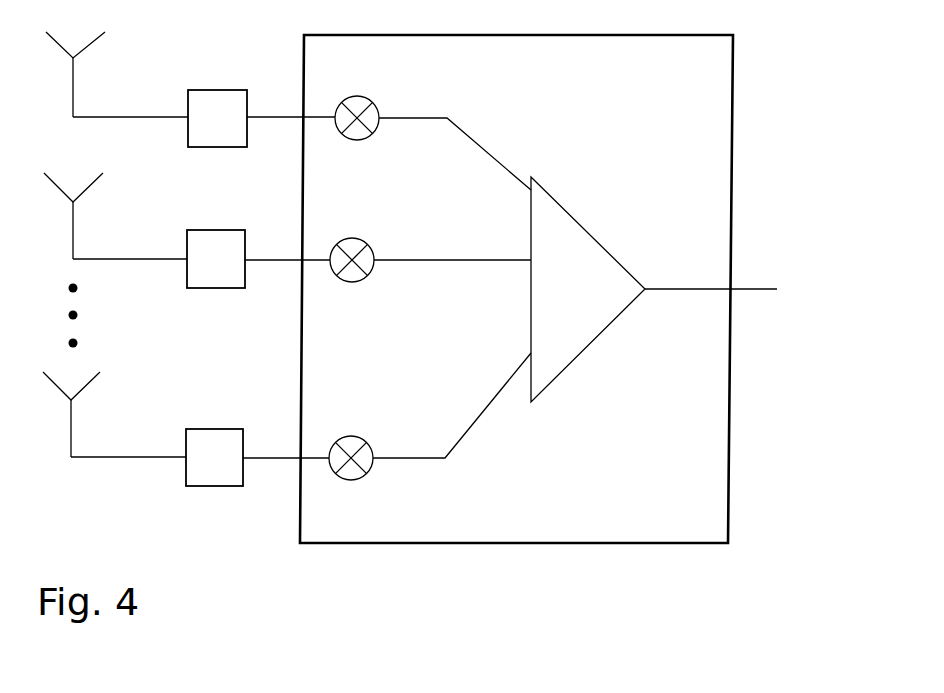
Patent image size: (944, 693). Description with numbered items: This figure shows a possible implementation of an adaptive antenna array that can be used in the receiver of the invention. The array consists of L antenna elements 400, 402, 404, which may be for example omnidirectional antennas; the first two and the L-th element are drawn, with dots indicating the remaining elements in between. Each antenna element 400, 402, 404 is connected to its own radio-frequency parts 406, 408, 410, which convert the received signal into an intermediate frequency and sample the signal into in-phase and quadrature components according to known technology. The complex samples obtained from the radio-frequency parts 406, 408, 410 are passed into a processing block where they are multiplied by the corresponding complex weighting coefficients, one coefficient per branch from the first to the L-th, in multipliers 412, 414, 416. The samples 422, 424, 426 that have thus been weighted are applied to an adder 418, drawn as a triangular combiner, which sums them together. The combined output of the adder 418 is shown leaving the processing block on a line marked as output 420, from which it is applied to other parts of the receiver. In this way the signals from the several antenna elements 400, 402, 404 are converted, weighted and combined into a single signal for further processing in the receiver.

The antenna element 400 is at (70, 83).
The antenna element 402 is at (70, 230).
The antenna element 404 is at (68, 428).
The radio-frequency parts 406 is at (219, 90).
The radio-frequency parts 408 is at (216, 230).
The radio-frequency parts 410 is at (214, 429).
The multiplier 412 is at (357, 140).
The multiplier 414 is at (352, 282).
The multiplier 416 is at (351, 480).
The adder 418 is at (565, 208).
The output 420 is at (715, 289).
The multiplied sample 422 is at (475, 138).
The multiplied sample 424 is at (428, 258).
The multiplied sample 426 is at (472, 423).